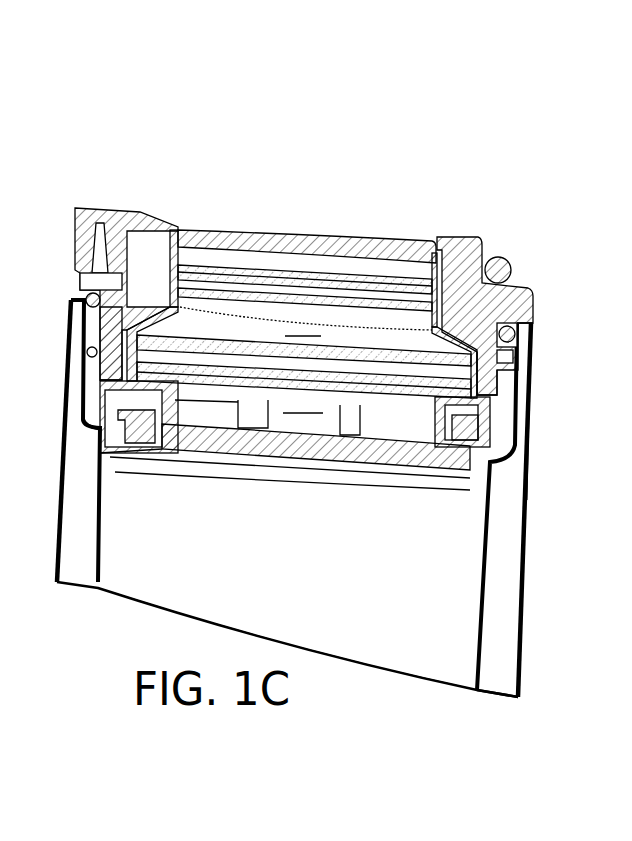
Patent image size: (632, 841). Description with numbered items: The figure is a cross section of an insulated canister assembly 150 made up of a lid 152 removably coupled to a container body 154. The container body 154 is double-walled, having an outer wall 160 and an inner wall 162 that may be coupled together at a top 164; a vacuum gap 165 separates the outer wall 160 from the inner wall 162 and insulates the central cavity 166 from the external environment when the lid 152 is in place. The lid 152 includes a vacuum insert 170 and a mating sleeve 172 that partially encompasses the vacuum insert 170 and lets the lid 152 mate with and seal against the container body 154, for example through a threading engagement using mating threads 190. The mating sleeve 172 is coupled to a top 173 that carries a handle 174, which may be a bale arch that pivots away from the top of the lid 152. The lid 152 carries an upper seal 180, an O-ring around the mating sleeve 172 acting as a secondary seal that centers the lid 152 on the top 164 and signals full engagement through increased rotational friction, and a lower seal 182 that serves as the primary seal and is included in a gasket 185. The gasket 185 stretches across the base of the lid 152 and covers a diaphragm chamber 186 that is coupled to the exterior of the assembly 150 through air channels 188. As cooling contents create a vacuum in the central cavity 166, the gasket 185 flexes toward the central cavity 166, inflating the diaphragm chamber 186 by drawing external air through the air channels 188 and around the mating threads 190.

The insulated canister assembly 150 is at (323, 129).
The lid 152 is at (457, 228).
The container body 154 is at (550, 466).
The outer wall 160 is at (524, 550).
The inner wall 162 is at (478, 577).
The top 164 is at (534, 335).
The vacuum gap 165 is at (494, 655).
The central cavity 166 is at (287, 498).
The vacuum insert 170 is at (302, 314).
The mating sleeve 172 is at (100, 328).
The top 173 is at (247, 232).
The handle 174 is at (498, 257).
The upper seal 180 is at (85, 298).
The lower seal 182 is at (97, 428).
The gasket 185 is at (218, 465).
The diaphragm chamber 186 is at (267, 413).
The air channels 188 is at (506, 380).
The mating threads 190 is at (509, 357).